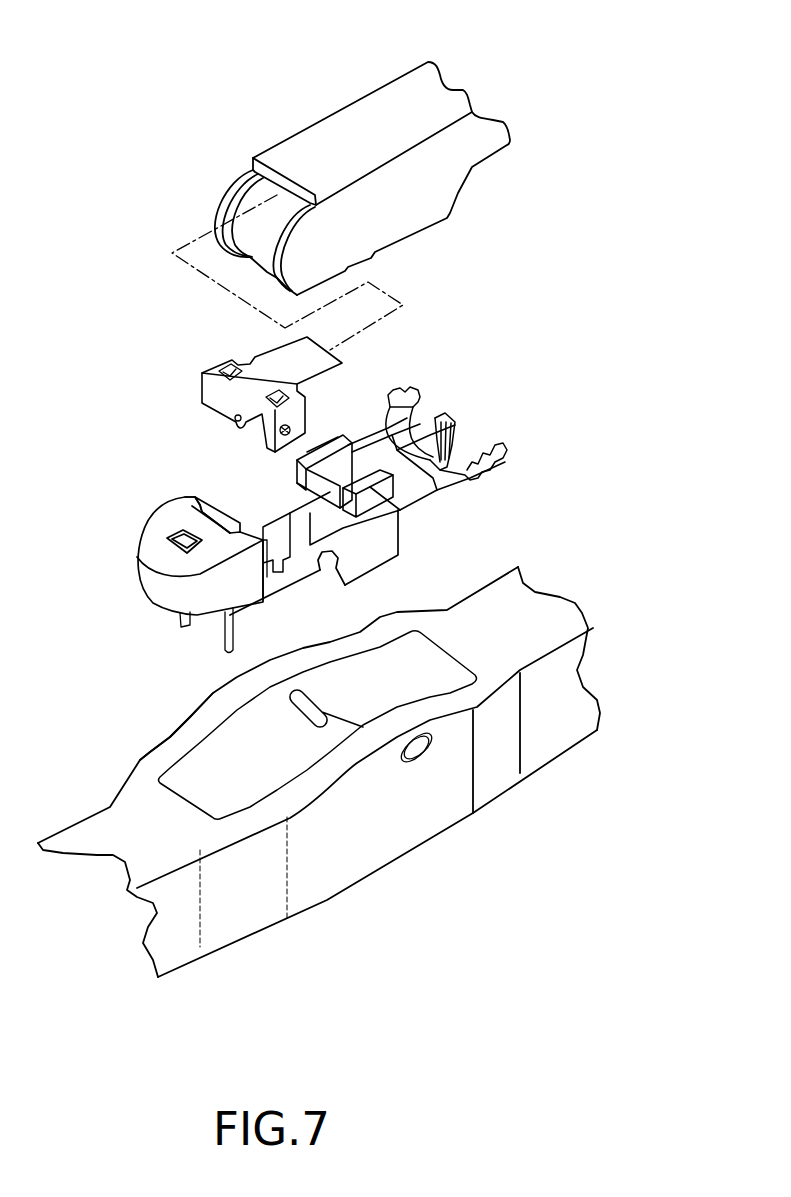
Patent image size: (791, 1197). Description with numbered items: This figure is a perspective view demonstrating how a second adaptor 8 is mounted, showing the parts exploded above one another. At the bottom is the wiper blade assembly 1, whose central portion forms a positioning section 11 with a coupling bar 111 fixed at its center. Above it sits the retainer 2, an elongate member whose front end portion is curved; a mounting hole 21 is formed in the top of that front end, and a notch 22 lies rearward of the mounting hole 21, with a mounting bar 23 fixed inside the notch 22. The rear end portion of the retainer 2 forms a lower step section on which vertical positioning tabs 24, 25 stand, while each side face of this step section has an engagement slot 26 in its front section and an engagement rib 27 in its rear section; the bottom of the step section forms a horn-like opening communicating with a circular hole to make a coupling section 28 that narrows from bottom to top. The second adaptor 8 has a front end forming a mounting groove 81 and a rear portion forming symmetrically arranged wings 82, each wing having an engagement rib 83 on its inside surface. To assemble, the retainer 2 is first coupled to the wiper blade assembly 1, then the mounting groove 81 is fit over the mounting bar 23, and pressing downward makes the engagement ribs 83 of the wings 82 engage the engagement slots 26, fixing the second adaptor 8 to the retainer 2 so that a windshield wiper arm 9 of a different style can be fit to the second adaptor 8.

The wiper blade assembly 1 is at (460, 822).
The positioning section 11 is at (187, 713).
The coupling bar 111 is at (328, 590).
The retainer 2 is at (465, 435).
The mounting hole 21 is at (137, 557).
The notch 22 is at (185, 497).
The mounting bar 23 is at (222, 520).
The vertical positioning tab 24 is at (218, 424).
The vertical positioning tab 25 is at (363, 443).
The engagement slot 26 is at (277, 527).
The engagement rib 27 is at (357, 597).
The coupling section 28 is at (408, 592).
The second adaptor 8 is at (243, 360).
The mounting groove 81 is at (240, 420).
The wings 82 is at (300, 428).
The engagement rib 83 is at (343, 447).
The windshield wiper arm 9 is at (321, 121).